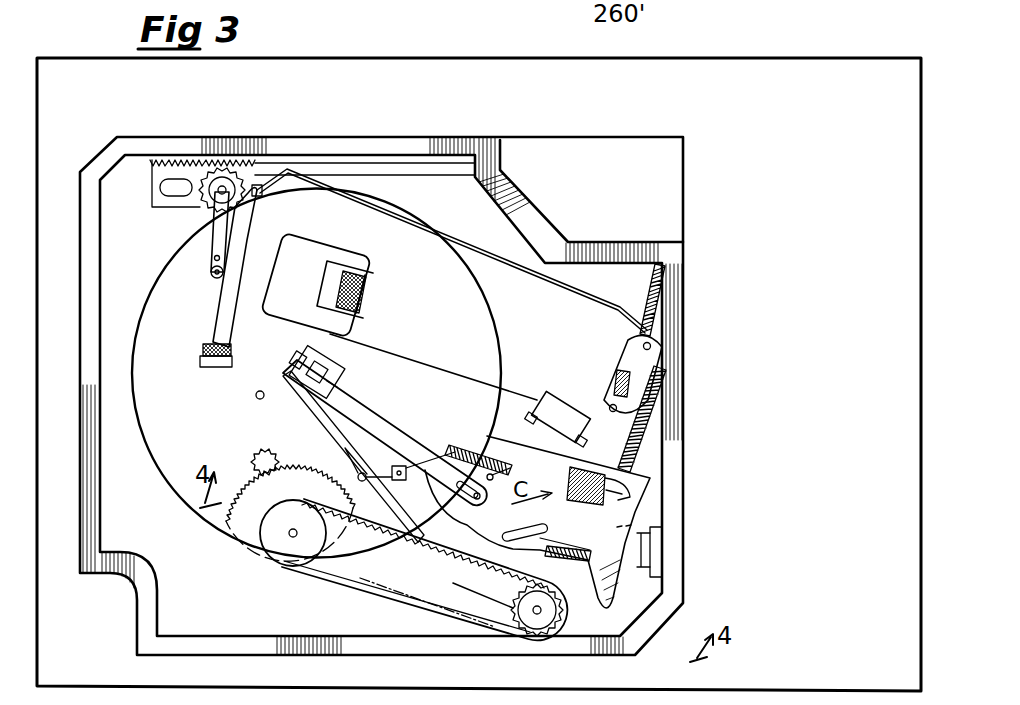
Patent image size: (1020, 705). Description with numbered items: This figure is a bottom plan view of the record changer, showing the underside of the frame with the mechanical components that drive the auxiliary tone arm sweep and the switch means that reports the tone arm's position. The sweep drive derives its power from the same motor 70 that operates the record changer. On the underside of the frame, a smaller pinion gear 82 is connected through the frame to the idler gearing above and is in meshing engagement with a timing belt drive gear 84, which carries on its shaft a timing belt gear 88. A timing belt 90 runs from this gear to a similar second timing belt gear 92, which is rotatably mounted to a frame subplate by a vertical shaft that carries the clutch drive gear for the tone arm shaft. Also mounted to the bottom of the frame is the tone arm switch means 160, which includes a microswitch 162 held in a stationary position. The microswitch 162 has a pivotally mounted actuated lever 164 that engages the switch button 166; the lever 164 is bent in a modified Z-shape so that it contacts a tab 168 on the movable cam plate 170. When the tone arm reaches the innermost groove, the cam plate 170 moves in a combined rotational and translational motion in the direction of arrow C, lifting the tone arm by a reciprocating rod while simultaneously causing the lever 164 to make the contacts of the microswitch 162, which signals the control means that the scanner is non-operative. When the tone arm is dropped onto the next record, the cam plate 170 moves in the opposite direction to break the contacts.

The motor 70 is at (307, 250).
The pinion gear 82 is at (262, 452).
The timing belt drive gear 84 is at (242, 545).
The timing belt gear 88 is at (277, 548).
The timing belt 90 is at (392, 596).
The second timing belt gear 92 is at (462, 584).
The tone arm switch means 160 is at (554, 374).
The microswitch 162 is at (575, 408).
The actuated lever 164 is at (533, 423).
The switch button 166 is at (580, 441).
The tab 168 is at (556, 482).
The cam plate 170 is at (633, 516).